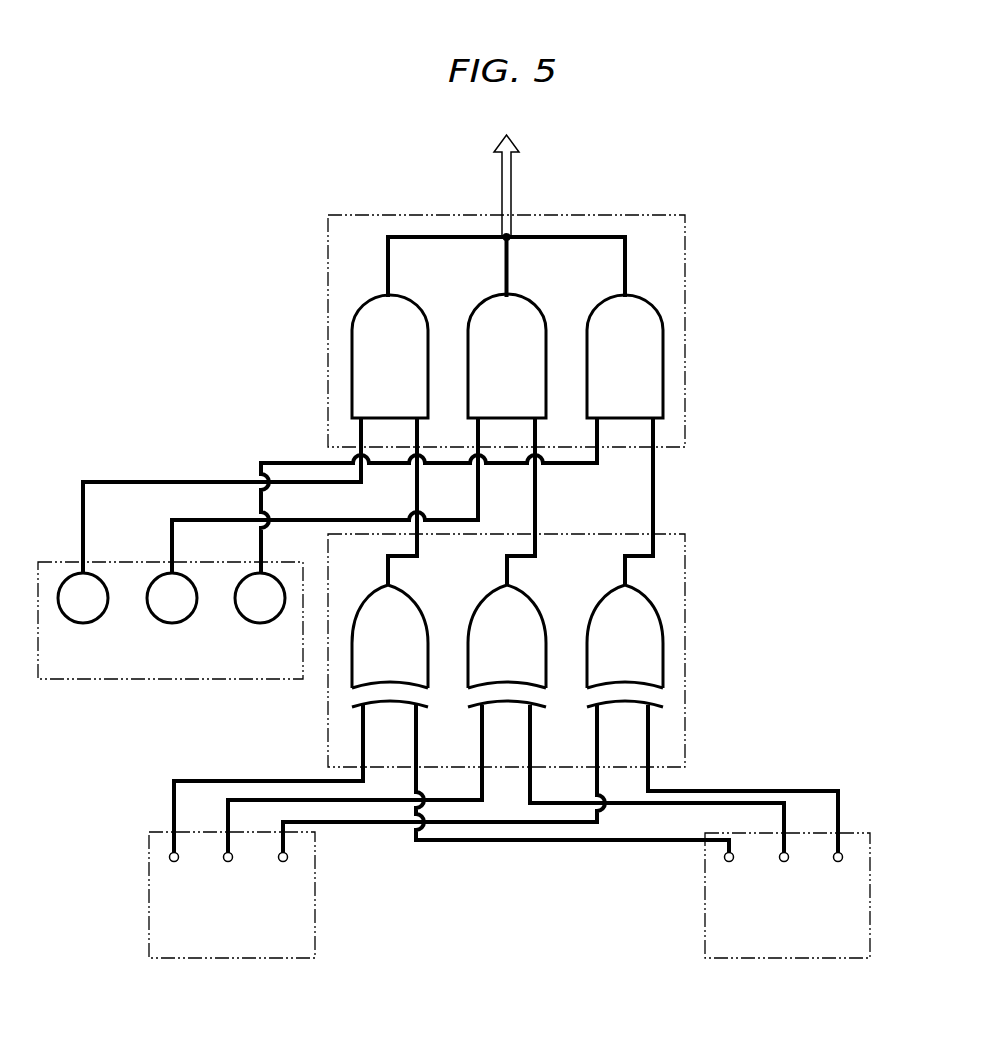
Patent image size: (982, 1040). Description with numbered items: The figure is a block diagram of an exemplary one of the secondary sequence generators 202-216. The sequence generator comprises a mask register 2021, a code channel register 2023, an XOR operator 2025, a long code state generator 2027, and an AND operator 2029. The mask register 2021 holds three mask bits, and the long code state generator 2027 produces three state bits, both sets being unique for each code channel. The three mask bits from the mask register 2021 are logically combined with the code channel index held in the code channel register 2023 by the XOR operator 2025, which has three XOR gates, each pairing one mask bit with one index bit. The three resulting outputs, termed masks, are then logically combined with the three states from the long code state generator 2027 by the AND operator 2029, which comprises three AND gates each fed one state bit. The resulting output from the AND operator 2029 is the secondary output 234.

The secondary sequence generators 202-216 is at (203, 203).
The secondary output 234 is at (509, 187).
The AND operator 2029 is at (686, 328).
The XOR operator 2025 is at (686, 657).
The long code state generator 2027 is at (167, 680).
The mask register 2021 is at (317, 937).
The code channel register 2023 is at (705, 931).